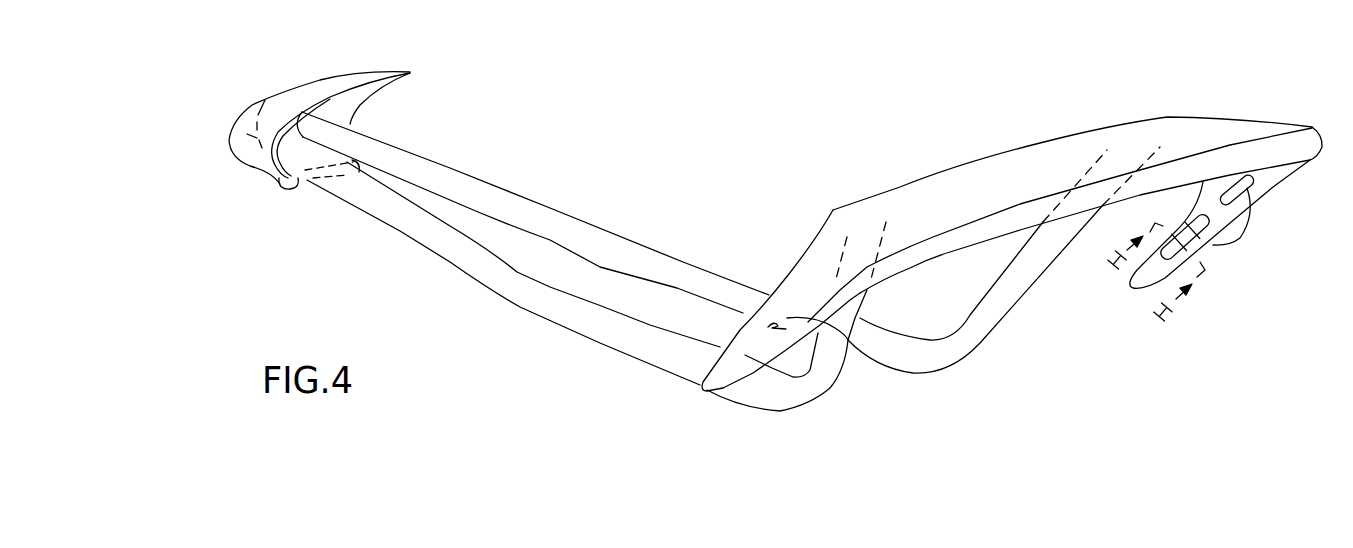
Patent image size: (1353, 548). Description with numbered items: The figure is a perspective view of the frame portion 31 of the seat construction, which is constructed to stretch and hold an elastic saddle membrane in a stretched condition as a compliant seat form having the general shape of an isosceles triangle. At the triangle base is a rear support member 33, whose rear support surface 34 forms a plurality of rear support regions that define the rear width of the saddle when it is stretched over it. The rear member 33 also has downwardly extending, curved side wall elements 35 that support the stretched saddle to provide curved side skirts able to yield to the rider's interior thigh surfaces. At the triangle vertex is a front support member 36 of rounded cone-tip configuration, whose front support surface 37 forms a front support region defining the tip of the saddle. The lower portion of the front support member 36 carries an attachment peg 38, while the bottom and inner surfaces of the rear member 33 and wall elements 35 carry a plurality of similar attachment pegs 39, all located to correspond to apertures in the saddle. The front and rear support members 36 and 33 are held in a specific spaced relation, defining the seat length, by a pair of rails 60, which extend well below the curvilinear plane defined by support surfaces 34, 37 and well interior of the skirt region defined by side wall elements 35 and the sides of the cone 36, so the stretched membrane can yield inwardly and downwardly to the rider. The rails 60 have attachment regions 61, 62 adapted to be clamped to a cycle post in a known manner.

The frame portion 31 is at (1003, 343).
The rear support member 33 is at (1180, 112).
The rear support surface 34 is at (1010, 170).
The curved side wall elements 35 is at (847, 341).
The front support member 36 is at (228, 118).
The front support surface 37 is at (295, 85).
The attachment peg 38 is at (298, 188).
The attachment pegs 39 is at (1236, 244).
The rails 60 is at (533, 248).
The attachment region 61 is at (688, 277).
The attachment region 62 is at (600, 328).